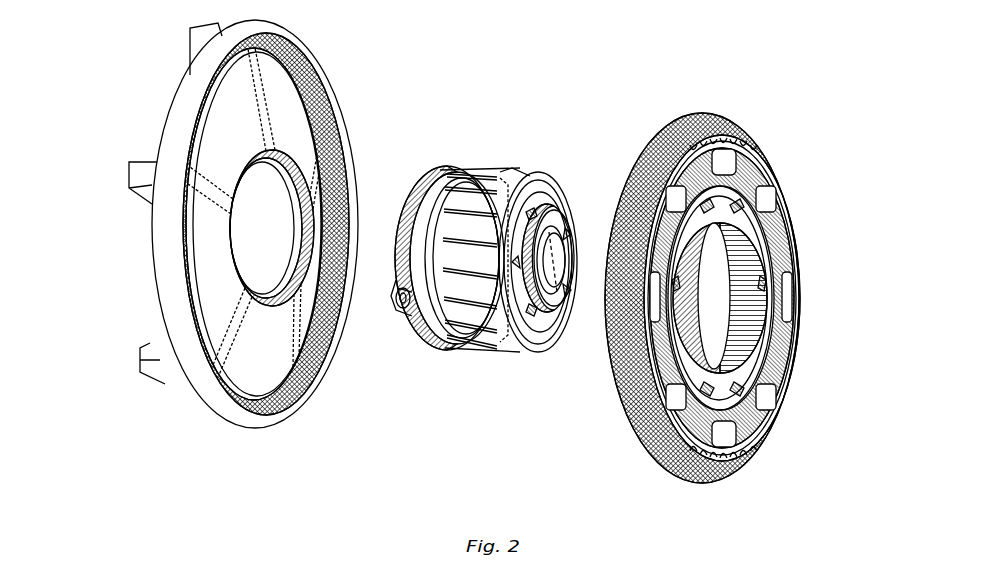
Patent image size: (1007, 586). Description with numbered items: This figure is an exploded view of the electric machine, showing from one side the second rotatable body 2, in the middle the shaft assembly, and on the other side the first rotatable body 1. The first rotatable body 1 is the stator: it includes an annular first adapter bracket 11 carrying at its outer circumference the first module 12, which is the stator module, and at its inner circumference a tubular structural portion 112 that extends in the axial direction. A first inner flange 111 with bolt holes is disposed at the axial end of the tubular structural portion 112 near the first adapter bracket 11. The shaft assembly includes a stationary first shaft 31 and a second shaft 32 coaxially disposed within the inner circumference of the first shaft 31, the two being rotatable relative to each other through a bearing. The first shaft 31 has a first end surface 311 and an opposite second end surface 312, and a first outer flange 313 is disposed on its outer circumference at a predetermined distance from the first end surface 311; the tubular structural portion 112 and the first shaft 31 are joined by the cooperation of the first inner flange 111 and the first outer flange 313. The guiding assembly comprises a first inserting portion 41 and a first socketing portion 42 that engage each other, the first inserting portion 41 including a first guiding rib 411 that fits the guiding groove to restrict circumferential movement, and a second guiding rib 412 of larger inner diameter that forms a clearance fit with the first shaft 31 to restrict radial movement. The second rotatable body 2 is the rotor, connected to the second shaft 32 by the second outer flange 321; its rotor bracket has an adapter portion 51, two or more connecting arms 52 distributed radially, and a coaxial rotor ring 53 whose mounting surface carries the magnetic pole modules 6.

The first rotatable body 1 is at (731, 270).
The first adapter bracket 11 is at (672, 295).
The first inner flange 111 is at (626, 425).
The tubular structural portion 112 is at (613, 368).
The first module 12 is at (782, 192).
The second rotatable body 2 is at (242, 224).
The first shaft 31 is at (511, 252).
The first end surface 311 is at (556, 205).
The second end surface 312 is at (422, 222).
The first outer flange 313 is at (494, 172).
The second shaft 32 is at (557, 236).
The second outer flange 321 is at (407, 192).
The first inserting portion 41 is at (786, 298).
The first guiding rib 411 is at (796, 212).
The second guiding rib 412 is at (800, 236).
The first socketing portion 42 is at (502, 190).
The adapter portion 51 is at (312, 183).
The connecting arms 52 is at (147, 212).
The rotor ring 53 is at (333, 123).
The magnetic pole modules 6 is at (302, 350).